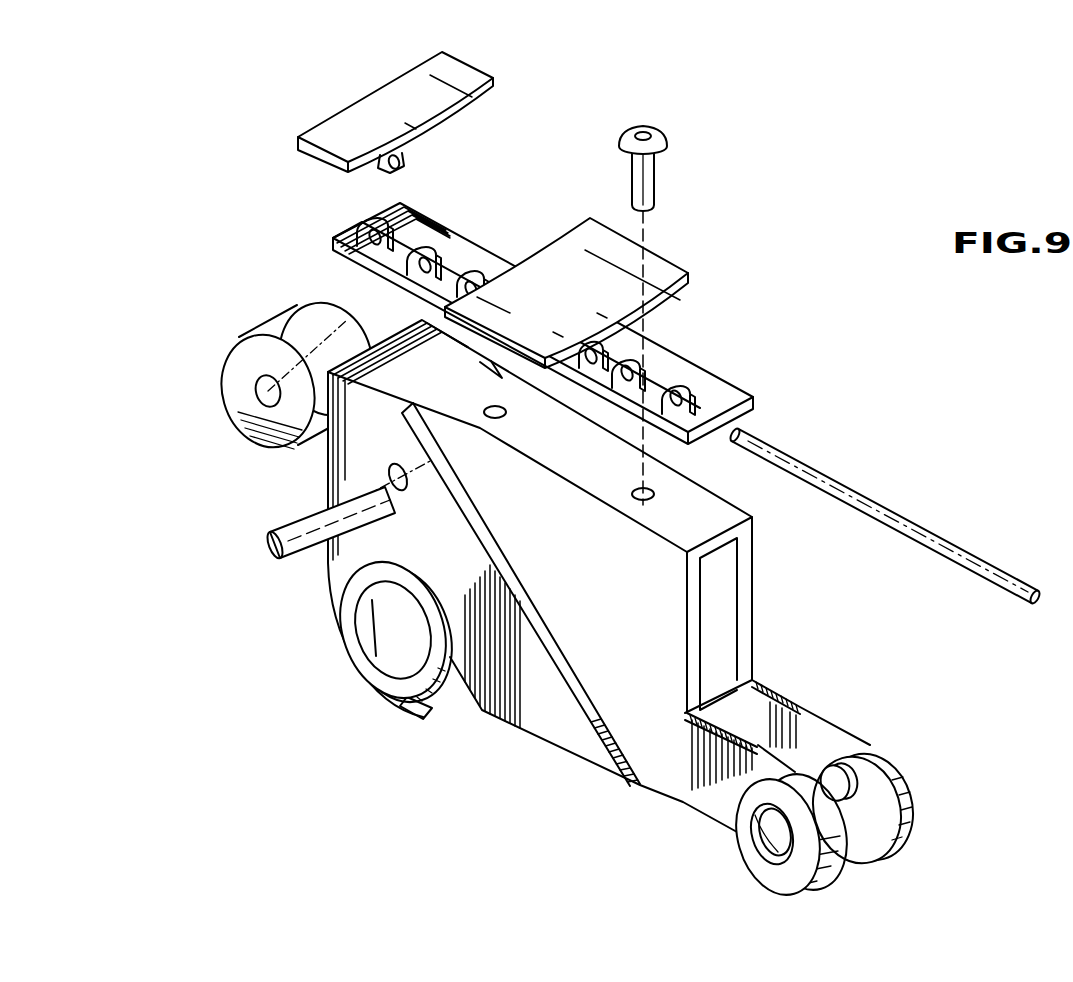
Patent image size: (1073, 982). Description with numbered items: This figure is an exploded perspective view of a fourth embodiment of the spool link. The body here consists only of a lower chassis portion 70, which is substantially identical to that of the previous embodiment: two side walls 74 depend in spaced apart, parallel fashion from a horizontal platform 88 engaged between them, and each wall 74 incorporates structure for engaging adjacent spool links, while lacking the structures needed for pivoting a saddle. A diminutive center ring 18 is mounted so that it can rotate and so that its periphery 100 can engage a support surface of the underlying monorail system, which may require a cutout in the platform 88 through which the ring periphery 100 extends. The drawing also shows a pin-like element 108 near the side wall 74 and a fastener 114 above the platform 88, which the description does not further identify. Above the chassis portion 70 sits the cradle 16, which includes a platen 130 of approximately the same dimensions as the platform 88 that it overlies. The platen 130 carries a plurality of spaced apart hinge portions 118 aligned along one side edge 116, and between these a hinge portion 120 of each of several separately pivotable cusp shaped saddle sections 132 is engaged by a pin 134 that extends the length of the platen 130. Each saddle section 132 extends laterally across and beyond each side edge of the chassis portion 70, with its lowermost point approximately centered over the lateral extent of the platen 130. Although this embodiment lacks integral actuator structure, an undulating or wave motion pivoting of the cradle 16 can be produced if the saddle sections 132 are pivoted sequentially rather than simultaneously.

The cradle 16 is at (275, 208).
The center ring 18 is at (235, 377).
The lower chassis portion 70 is at (697, 773).
The side wall 74 is at (547, 715).
The platform 88 is at (737, 515).
The periphery 100 is at (292, 315).
The pin 108 is at (307, 545).
The screw 114 is at (655, 180).
The side edge 116 is at (617, 400).
The hinge portions 118 is at (420, 250).
The hinge portion 120 is at (405, 163).
The platen 130 is at (717, 386).
The cusp shaped saddle section 132 is at (455, 72).
The pin 134 is at (950, 543).